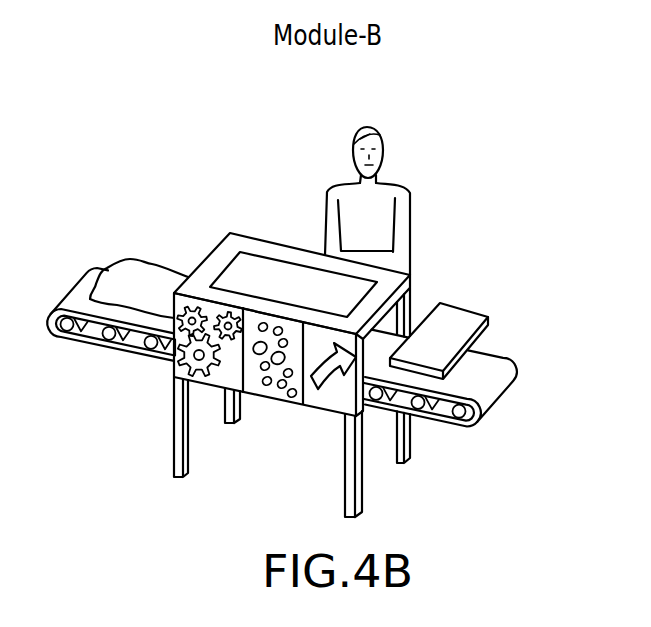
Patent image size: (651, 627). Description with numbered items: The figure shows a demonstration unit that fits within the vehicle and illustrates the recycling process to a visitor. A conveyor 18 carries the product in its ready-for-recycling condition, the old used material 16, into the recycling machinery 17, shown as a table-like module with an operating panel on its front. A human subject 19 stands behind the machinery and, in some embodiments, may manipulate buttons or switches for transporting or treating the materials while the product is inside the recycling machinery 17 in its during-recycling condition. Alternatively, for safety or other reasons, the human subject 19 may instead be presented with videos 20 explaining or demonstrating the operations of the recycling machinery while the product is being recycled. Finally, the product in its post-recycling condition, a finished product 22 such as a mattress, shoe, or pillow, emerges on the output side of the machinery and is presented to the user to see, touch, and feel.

The old used material 16 is at (128, 270).
The recycling machinery 17 is at (254, 207).
The conveyor 18 is at (121, 351).
The human subject 19 is at (371, 128).
The videos 20 is at (278, 399).
The finished product 22 is at (464, 327).